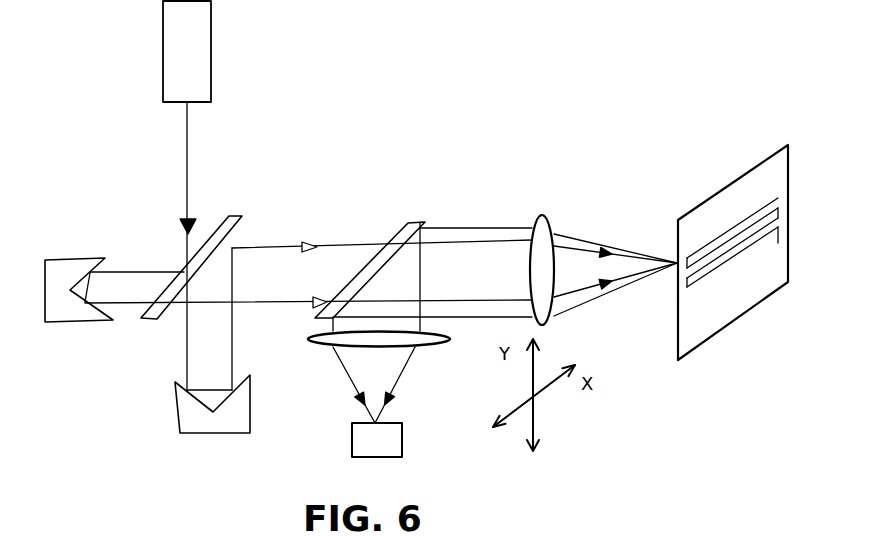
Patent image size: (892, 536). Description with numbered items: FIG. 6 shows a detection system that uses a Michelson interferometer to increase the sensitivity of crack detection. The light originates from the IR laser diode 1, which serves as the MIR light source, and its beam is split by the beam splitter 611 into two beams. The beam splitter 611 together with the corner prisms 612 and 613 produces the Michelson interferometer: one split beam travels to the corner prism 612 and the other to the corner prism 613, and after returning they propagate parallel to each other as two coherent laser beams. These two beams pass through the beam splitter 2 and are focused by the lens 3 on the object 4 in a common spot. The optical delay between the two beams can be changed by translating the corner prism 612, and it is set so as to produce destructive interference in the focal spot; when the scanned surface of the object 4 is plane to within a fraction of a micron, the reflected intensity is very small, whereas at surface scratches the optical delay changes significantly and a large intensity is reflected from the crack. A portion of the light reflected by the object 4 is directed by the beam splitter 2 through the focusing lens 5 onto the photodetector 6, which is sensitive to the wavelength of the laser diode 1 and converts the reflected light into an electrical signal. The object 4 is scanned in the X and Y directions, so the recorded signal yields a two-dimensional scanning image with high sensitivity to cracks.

The IR laser diode 1 is at (187, 51).
The beam splitter 2 is at (370, 255).
The lens 3 is at (542, 255).
The object 4 is at (733, 252).
The focusing lens 5 is at (369, 353).
The photodetector 6 is at (377, 440).
The beam splitter 611 is at (250, 206).
The corner prism 612 is at (70, 257).
The corner prism 613 is at (246, 436).